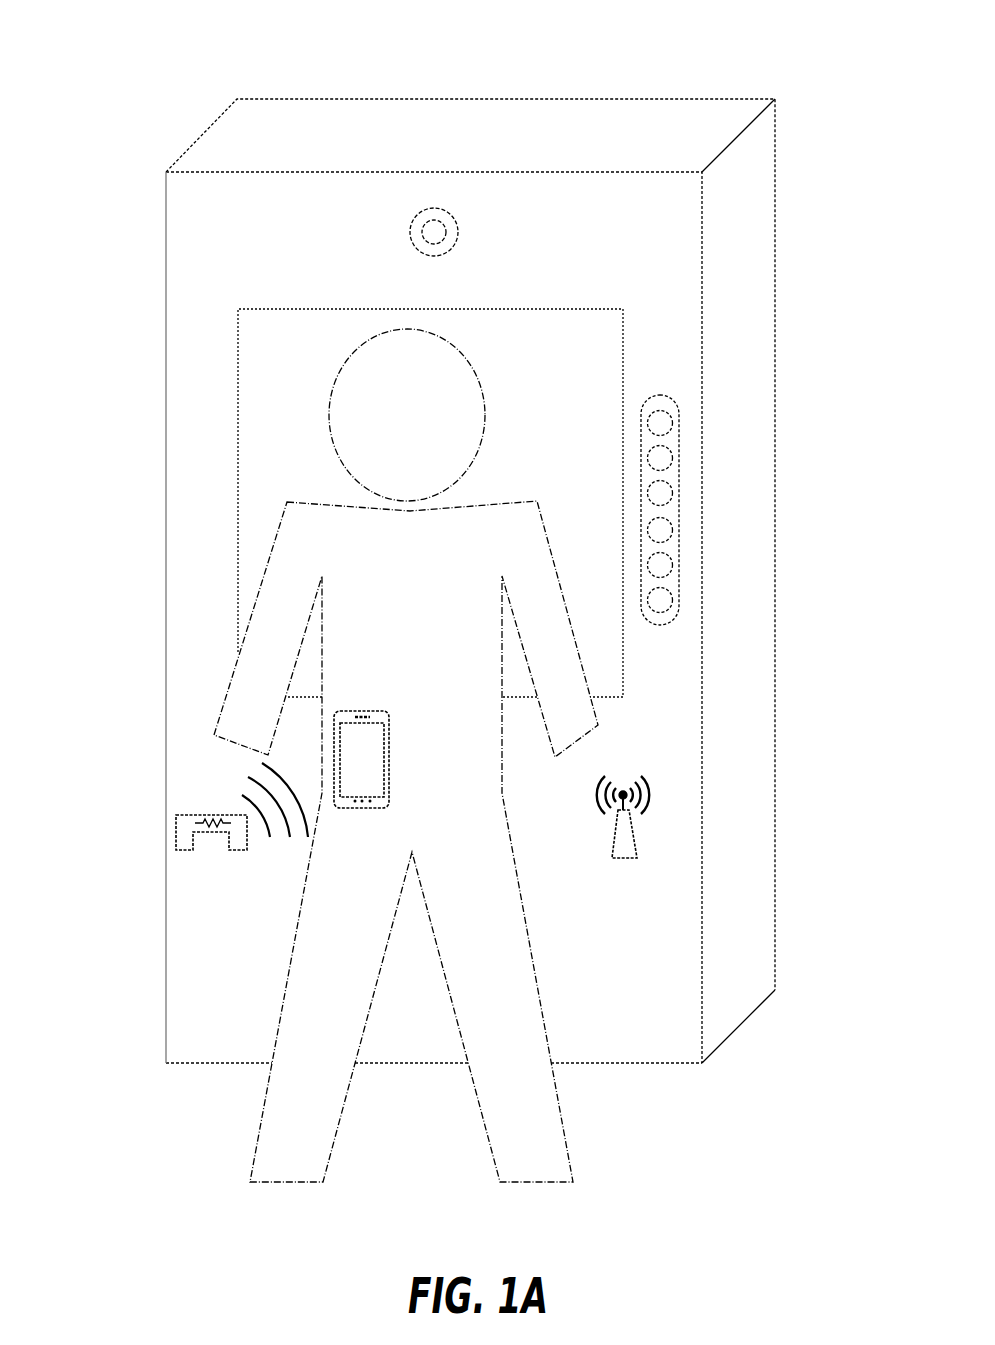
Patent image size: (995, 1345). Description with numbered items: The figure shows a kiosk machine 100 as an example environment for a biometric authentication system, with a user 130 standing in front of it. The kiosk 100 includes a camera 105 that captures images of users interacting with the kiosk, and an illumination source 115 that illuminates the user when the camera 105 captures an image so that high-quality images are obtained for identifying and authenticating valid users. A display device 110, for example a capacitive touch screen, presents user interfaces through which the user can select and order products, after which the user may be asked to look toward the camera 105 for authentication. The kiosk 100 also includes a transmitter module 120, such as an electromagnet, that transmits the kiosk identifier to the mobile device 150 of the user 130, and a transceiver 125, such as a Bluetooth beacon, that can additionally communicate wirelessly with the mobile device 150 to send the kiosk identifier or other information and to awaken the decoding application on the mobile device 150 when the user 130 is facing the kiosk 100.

The kiosk machine 100 is at (118, 61).
The camera 105 is at (434, 232).
The display device 110 is at (532, 343).
The illumination source 115 is at (665, 401).
The transmitter module 120 is at (185, 812).
The transceiver 125 is at (647, 787).
The user 130 is at (320, 536).
The mobile device 150 is at (357, 710).